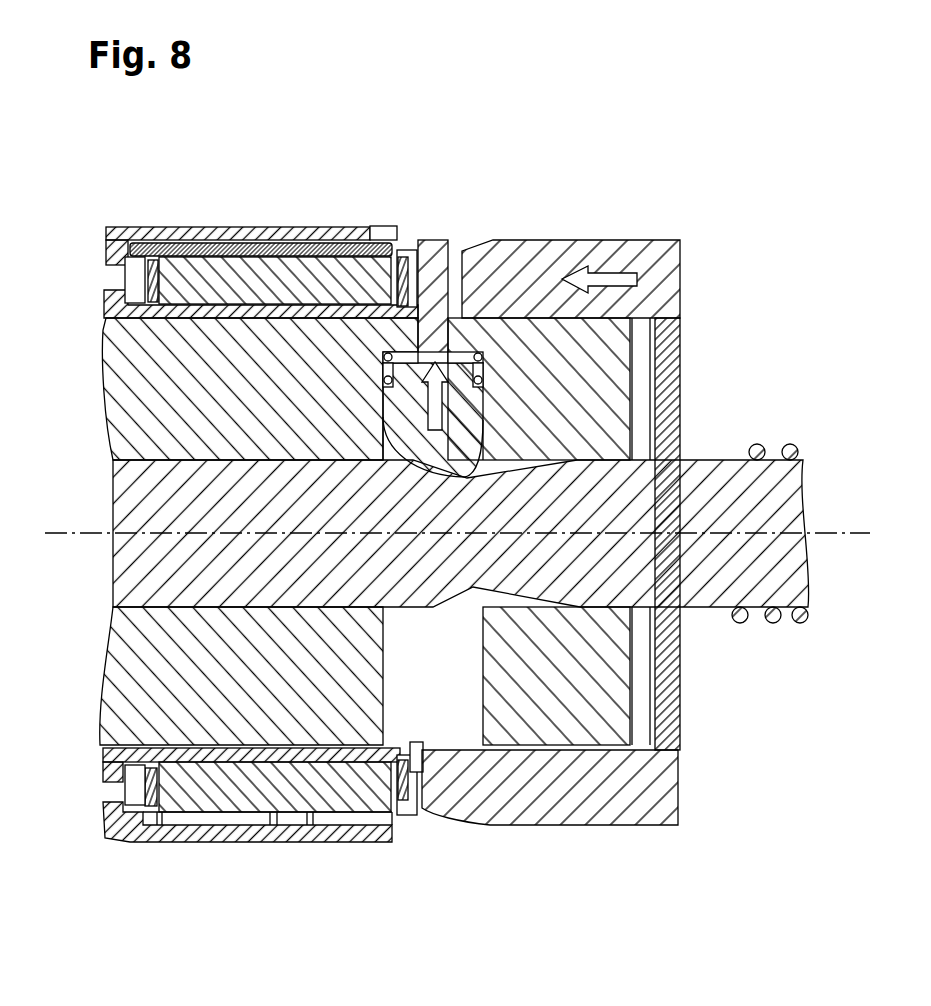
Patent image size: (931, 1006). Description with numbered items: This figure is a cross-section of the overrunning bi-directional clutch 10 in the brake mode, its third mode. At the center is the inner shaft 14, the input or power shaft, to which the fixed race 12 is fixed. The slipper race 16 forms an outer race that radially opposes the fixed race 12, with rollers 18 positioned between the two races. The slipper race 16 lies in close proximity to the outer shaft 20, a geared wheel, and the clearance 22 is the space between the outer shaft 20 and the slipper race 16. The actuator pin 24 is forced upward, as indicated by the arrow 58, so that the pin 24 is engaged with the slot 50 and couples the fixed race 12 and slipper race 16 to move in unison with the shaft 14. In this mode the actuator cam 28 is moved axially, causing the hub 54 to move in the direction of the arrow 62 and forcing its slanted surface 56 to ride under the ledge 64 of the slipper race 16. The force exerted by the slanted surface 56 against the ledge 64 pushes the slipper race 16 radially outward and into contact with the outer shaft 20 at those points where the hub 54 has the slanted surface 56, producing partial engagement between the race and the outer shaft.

The overrunning bi-directional clutch 10 is at (86, 214).
The fixed race 12 is at (110, 763).
The inner shaft 14 is at (125, 402).
The slipper race 16 is at (270, 242).
The rollers 18 is at (167, 798).
The outer shaft 20 is at (195, 233).
The clearance 22 is at (352, 817).
The actuator pin 24 is at (438, 240).
The actuator cam 28 is at (770, 468).
The slot 50 is at (410, 248).
The hub 54 is at (580, 242).
The slanted surface 56 is at (513, 247).
The arrow 58 is at (433, 398).
The arrow 62 is at (618, 278).
The ledge 64 is at (397, 250).